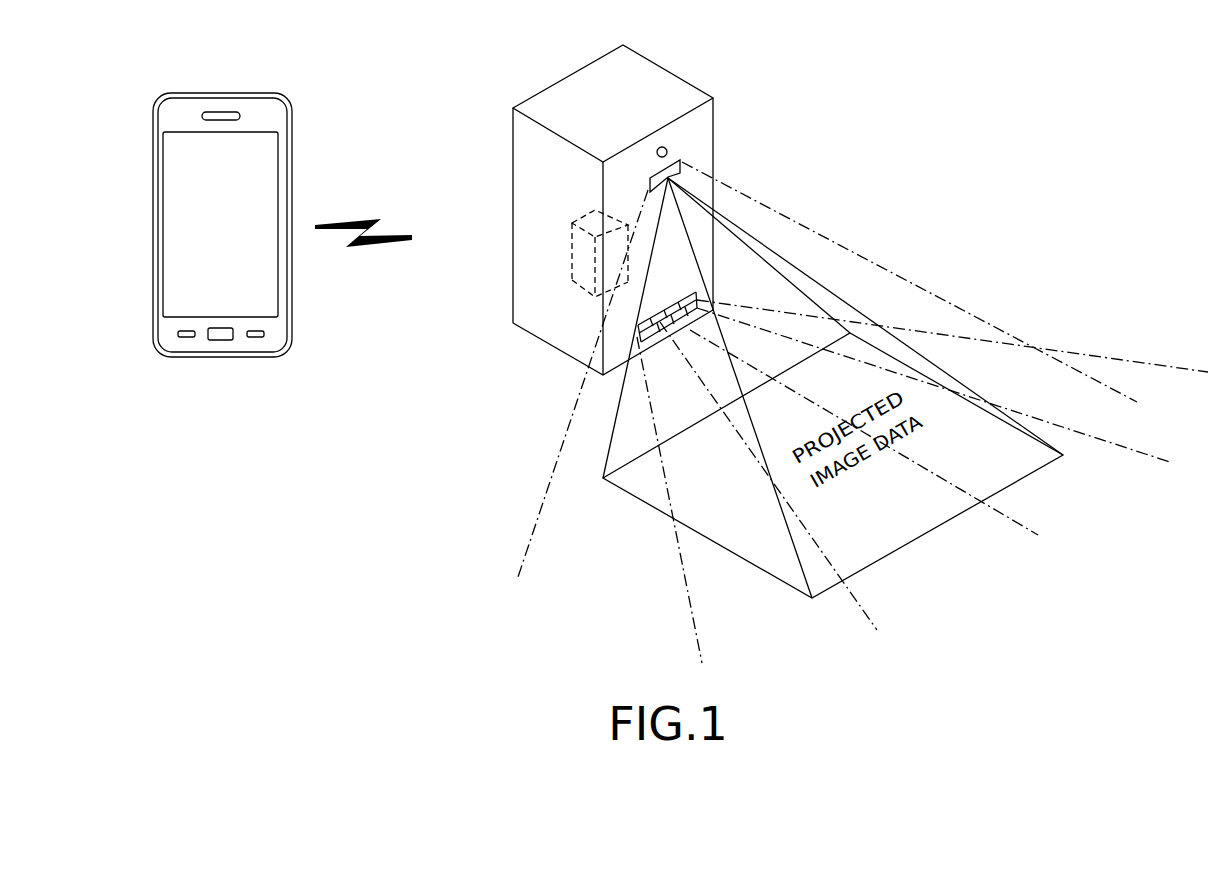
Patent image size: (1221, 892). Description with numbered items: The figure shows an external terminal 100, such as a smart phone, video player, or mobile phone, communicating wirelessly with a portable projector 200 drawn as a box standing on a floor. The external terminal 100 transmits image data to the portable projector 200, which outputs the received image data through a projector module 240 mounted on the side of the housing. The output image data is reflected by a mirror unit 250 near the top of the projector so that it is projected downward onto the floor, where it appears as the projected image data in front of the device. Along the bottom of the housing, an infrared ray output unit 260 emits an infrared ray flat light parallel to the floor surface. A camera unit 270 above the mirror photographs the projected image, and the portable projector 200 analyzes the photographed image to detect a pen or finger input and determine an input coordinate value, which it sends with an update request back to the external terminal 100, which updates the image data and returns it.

The external terminal 100 is at (218, 93).
The portable projector 200 is at (661, 67).
The projector module 240 is at (573, 246).
The mirror unit 250 is at (684, 160).
The infrared ray output unit 260 is at (637, 336).
The camera unit 270 is at (667, 149).